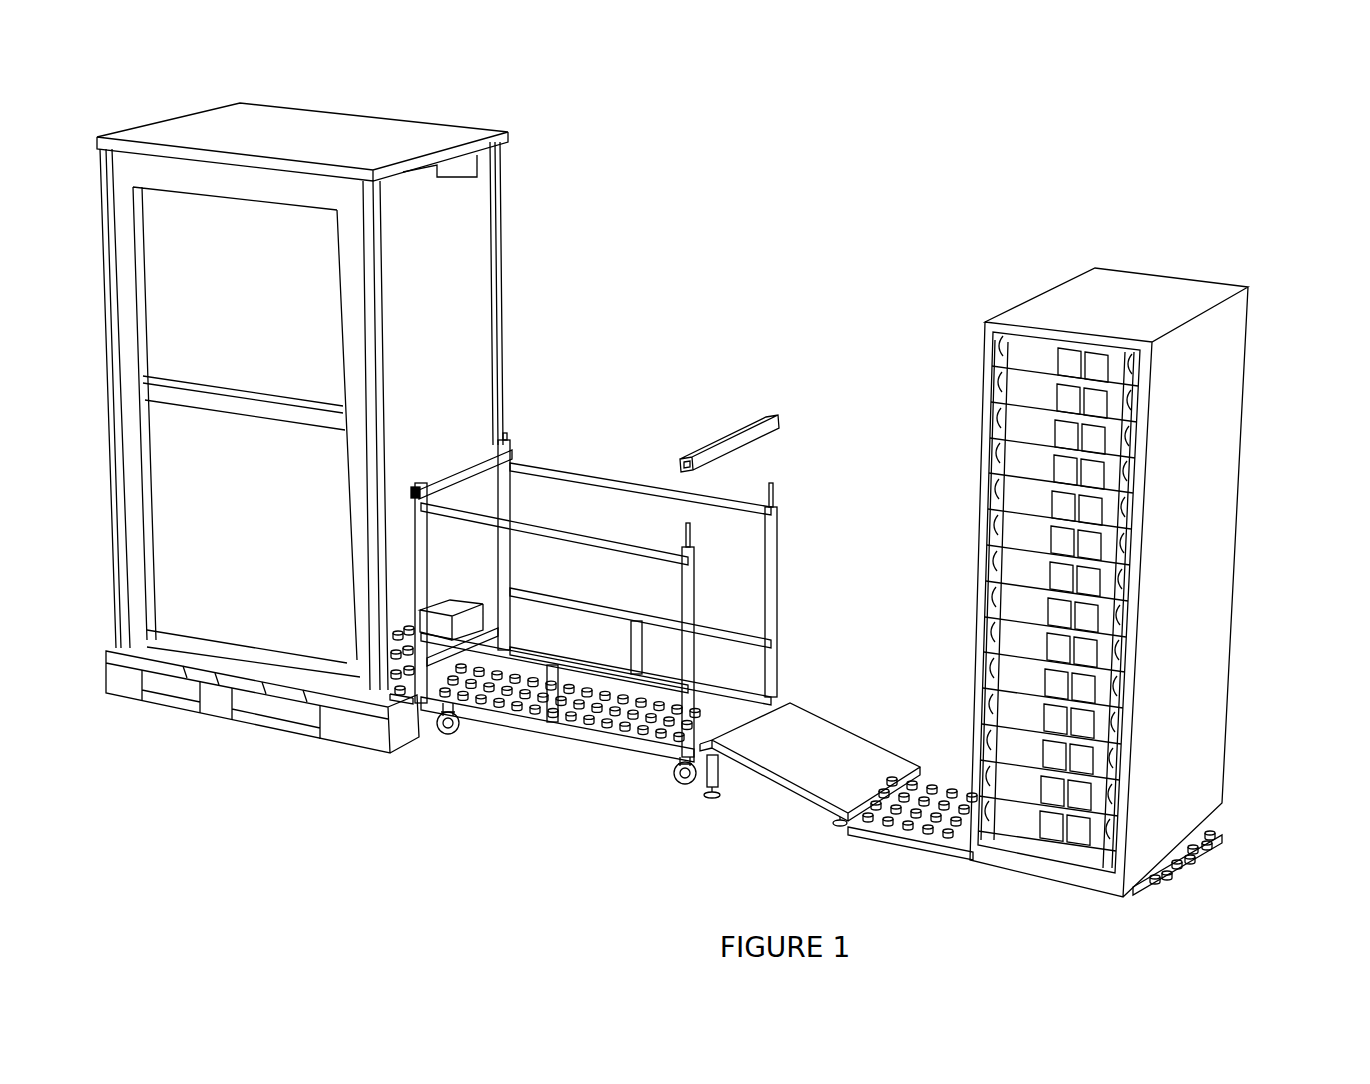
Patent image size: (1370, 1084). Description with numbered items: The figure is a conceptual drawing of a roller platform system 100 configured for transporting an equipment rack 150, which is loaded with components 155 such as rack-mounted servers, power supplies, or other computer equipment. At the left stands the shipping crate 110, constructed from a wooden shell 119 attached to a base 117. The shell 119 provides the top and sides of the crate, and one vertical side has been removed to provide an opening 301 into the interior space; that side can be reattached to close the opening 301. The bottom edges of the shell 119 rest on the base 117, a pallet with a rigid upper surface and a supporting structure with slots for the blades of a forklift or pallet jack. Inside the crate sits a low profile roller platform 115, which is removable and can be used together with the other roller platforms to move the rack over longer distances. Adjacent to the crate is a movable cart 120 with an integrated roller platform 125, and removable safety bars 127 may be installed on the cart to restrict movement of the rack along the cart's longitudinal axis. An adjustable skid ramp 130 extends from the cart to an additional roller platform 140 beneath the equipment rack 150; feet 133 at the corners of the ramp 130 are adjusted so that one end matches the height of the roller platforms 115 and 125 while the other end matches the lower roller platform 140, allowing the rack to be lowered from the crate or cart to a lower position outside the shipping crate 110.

The roller platform system 100 is at (895, 86).
The shipping crate 110 is at (380, 103).
The roller platform 115 is at (388, 628).
The base 117 is at (268, 742).
The shell 119 is at (512, 226).
The movable cart 120 is at (516, 760).
The integrated roller platform 125 is at (579, 712).
The safety bars 127 is at (466, 453).
The adjustable skid ramp 130 is at (841, 711).
The feet 133 is at (816, 831).
The roller platform 140 is at (1192, 877).
The equipment rack 150 is at (928, 326).
The components 155 is at (1022, 478).
The opening 301 is at (456, 332).